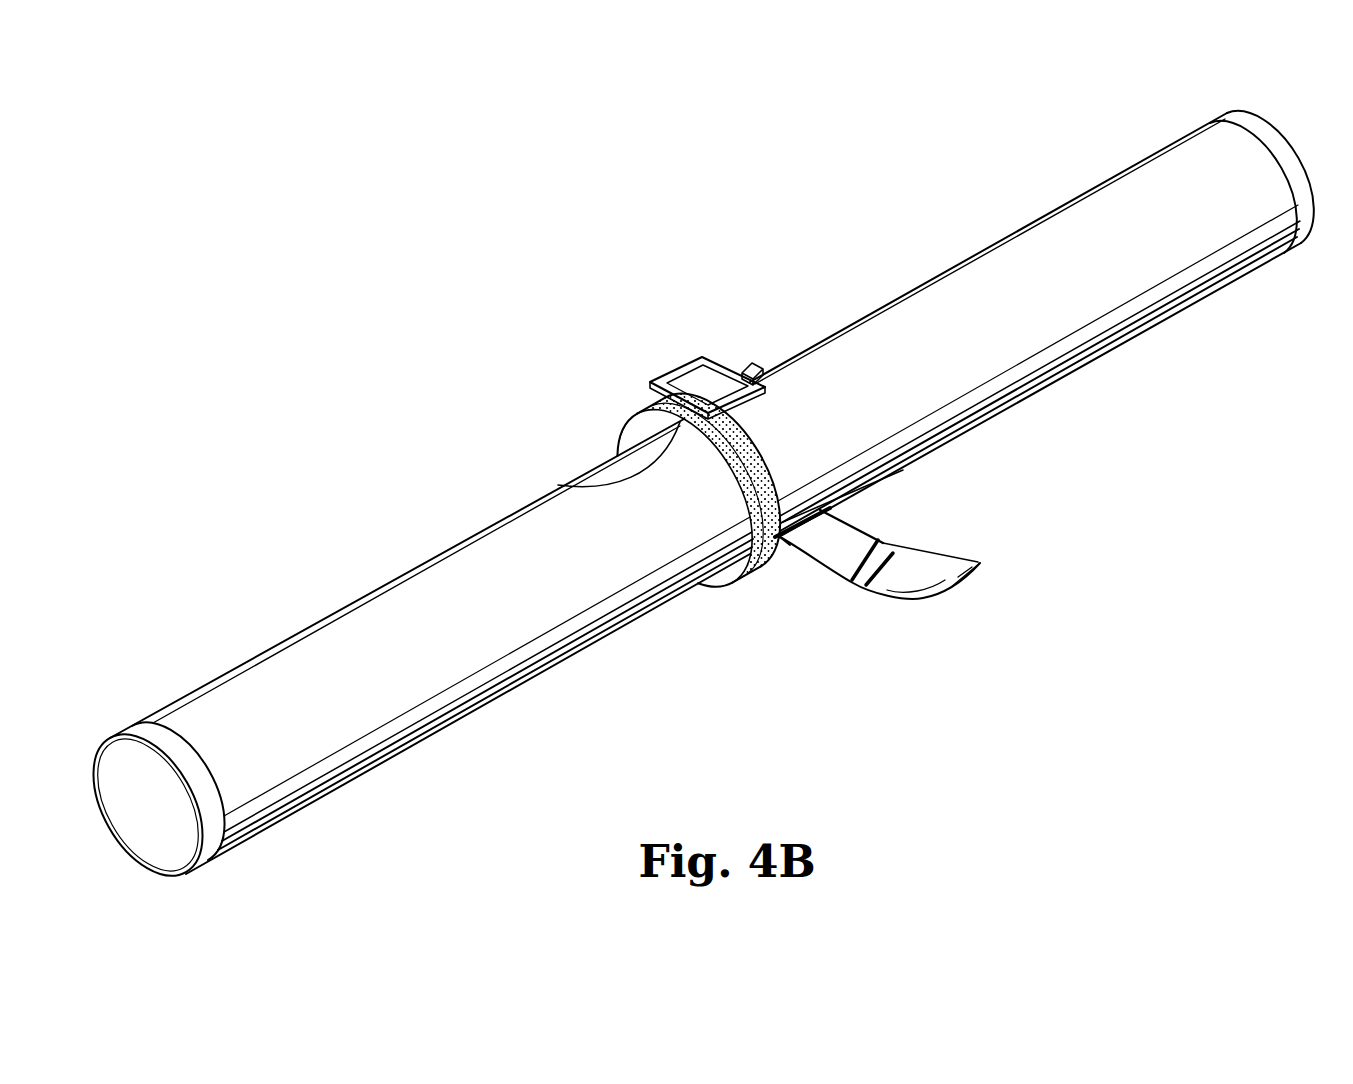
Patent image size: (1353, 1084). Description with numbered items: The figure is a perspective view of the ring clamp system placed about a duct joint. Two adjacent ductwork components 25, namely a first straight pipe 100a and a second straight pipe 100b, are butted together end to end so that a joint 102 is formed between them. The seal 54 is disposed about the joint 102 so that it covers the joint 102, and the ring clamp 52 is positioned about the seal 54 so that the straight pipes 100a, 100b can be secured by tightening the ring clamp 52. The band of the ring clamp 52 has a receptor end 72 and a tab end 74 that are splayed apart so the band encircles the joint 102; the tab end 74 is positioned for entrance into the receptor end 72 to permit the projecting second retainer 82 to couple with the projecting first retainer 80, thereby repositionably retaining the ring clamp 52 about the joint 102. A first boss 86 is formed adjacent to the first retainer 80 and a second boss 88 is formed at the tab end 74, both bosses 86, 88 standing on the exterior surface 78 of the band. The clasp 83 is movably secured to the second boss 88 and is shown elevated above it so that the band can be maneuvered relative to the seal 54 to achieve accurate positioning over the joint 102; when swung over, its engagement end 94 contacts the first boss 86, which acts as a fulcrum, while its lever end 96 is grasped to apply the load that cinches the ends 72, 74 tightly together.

The ductwork component 25 is at (1141, 356).
The first straight pipe 100a is at (362, 617).
The second straight pipe 100b is at (1002, 253).
The ring clamp 52 is at (754, 478).
The seal 54 is at (571, 483).
The receptor end 72 is at (745, 390).
The tab end 74 is at (787, 497).
The exterior surface 78 is at (784, 553).
The first retainer 80 is at (724, 353).
The second retainer 82 is at (756, 527).
The clasp 83 is at (900, 570).
The first boss 86 is at (683, 372).
The second boss 88 is at (850, 496).
The engagement end 94 is at (817, 562).
The lever end 96 is at (968, 572).
The joint 102 is at (722, 490).